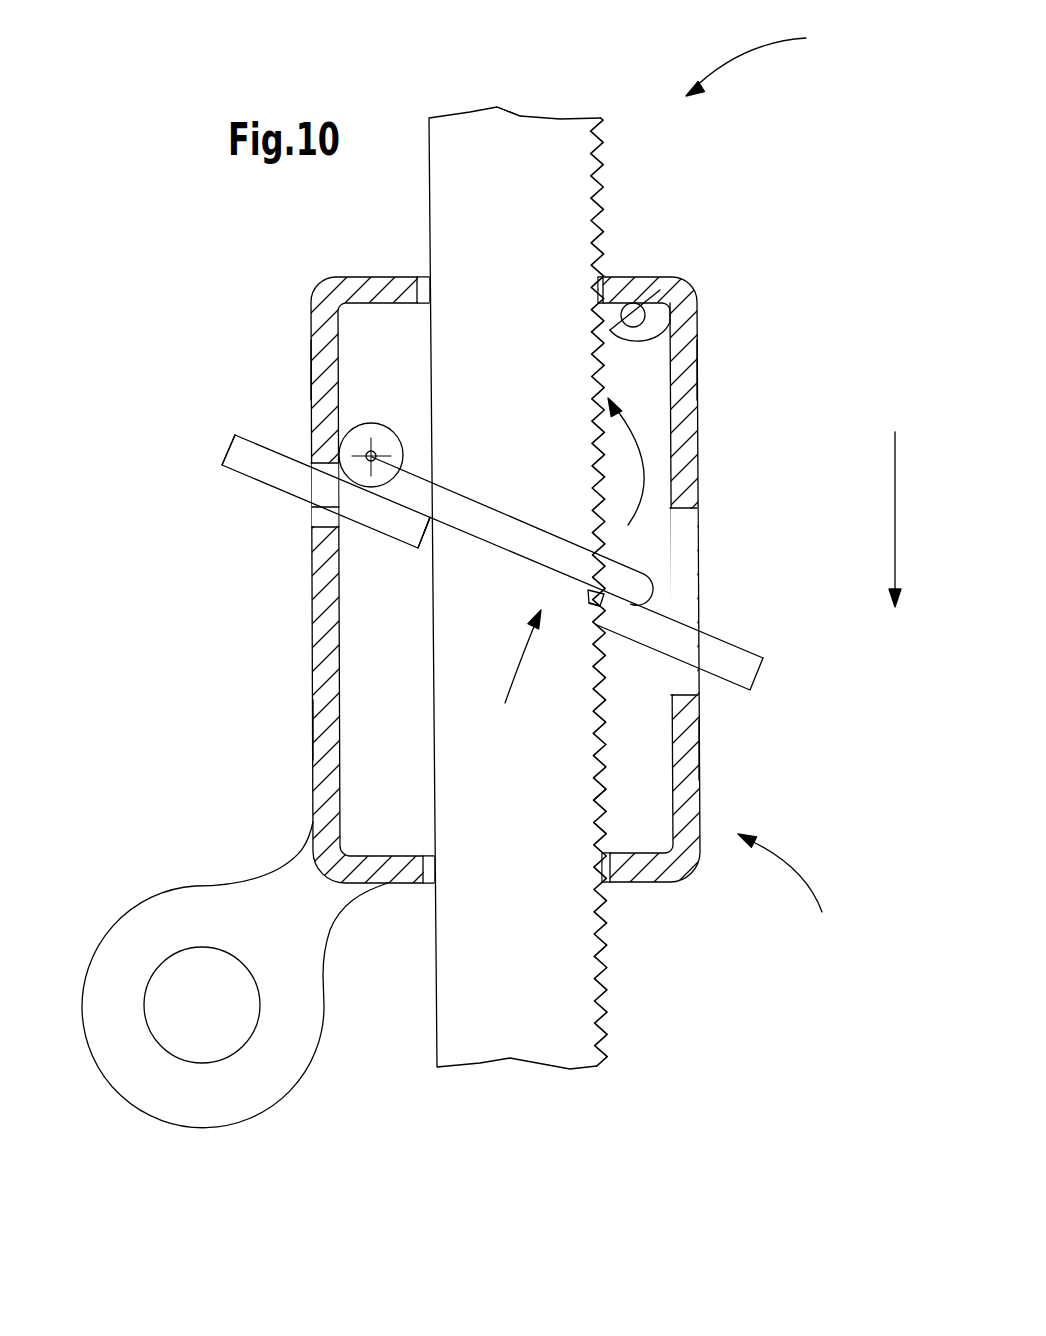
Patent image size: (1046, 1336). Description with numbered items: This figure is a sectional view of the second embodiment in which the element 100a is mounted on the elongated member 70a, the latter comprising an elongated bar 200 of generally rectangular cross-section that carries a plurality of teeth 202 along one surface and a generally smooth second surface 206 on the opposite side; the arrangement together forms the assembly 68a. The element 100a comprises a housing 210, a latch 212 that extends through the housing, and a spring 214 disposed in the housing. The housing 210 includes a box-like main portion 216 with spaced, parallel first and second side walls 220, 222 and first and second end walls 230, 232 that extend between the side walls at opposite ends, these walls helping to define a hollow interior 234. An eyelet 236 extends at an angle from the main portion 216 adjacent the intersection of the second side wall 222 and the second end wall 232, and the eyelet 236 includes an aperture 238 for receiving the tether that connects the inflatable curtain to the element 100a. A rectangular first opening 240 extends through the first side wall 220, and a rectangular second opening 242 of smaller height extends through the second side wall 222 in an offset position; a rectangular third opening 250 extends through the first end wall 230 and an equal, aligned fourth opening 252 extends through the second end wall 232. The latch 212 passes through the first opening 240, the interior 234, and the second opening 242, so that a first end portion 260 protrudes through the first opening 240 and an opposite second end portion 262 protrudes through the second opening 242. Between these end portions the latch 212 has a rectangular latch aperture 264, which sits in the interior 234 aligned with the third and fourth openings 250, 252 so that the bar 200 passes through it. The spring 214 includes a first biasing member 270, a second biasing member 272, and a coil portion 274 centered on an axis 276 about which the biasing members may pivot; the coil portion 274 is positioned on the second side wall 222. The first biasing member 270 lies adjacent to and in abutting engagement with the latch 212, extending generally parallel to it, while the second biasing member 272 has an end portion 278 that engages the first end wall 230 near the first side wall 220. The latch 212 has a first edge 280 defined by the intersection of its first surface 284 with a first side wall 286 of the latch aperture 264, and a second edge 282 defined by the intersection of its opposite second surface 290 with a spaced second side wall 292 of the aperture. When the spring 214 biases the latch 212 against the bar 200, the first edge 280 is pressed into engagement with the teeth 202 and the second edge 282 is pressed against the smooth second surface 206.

The elongated bar 200 is at (502, 157).
The elongated member 70a is at (562, 152).
The buckle assembly 68a is at (771, 56).
The first end wall 230 is at (632, 288).
The third opening 250 is at (599, 277).
The end portion 278 is at (655, 300).
The second biasing member 272 is at (431, 405).
The spring 214 is at (660, 332).
The second side wall 222 is at (318, 395).
The first side wall 220 is at (695, 368).
The second surface 290 is at (243, 434).
The coil portion 274 is at (356, 437).
The housing 210 is at (680, 424).
The axis 276 is at (403, 441).
The second end portion 262 is at (325, 490).
The first opening 240 is at (686, 525).
The second opening 242 is at (327, 516).
The first biasing member 270 is at (688, 550).
The first side wall 286 is at (596, 612).
The first edge 280 is at (648, 604).
The second edge 282 is at (432, 519).
The latch 212 is at (650, 628).
The first end portion 260 is at (682, 640).
The second side wall 292 is at (433, 522).
The second surface 206 is at (434, 668).
The hollow interior 234 is at (382, 710).
The latch aperture 264 is at (509, 673).
The first surface 284 is at (658, 642).
The teeth 202 is at (645, 785).
The main portion 216 is at (684, 736).
The eyelet 236 is at (123, 943).
The fourth opening 252 is at (428, 886).
The second end wall 232 is at (637, 870).
The element 100a is at (801, 888).
The aperture 238 is at (205, 1010).